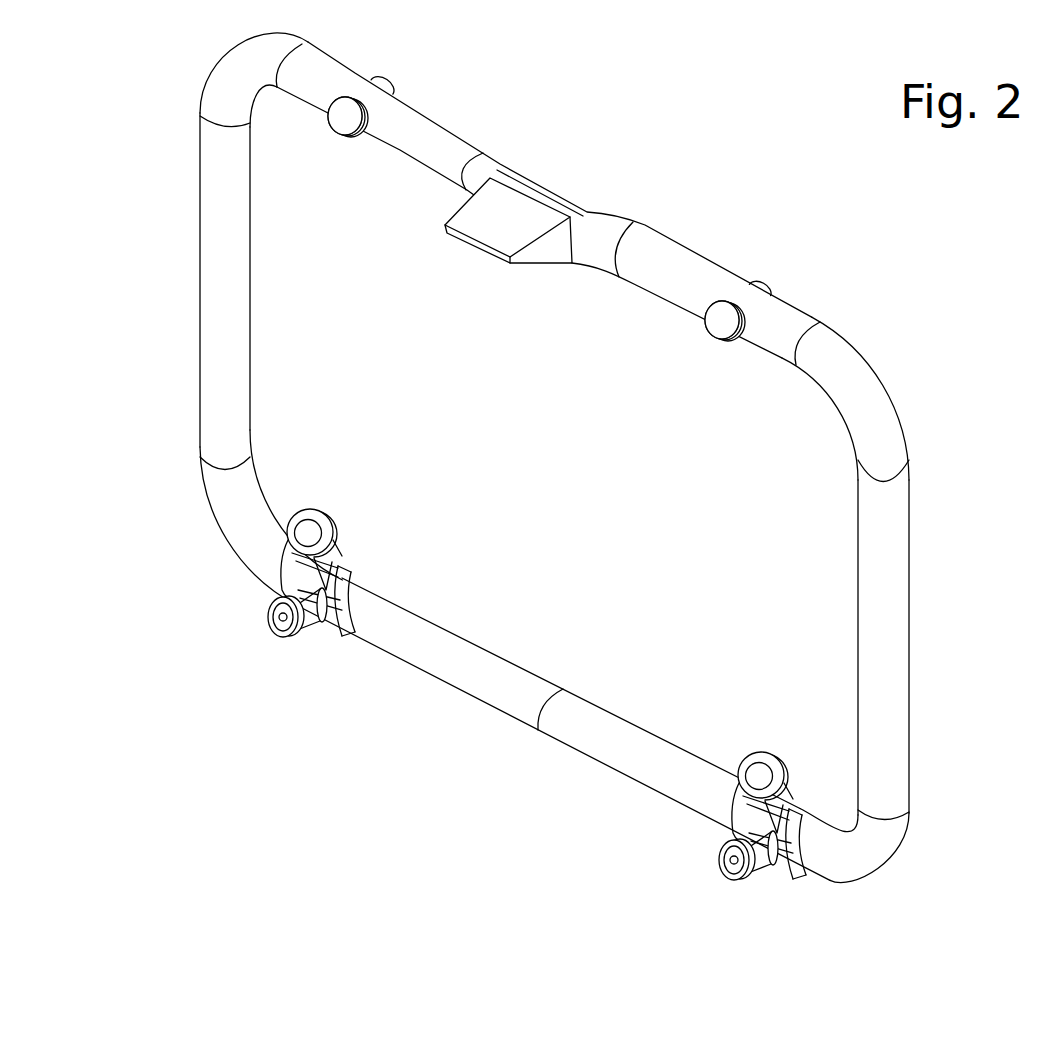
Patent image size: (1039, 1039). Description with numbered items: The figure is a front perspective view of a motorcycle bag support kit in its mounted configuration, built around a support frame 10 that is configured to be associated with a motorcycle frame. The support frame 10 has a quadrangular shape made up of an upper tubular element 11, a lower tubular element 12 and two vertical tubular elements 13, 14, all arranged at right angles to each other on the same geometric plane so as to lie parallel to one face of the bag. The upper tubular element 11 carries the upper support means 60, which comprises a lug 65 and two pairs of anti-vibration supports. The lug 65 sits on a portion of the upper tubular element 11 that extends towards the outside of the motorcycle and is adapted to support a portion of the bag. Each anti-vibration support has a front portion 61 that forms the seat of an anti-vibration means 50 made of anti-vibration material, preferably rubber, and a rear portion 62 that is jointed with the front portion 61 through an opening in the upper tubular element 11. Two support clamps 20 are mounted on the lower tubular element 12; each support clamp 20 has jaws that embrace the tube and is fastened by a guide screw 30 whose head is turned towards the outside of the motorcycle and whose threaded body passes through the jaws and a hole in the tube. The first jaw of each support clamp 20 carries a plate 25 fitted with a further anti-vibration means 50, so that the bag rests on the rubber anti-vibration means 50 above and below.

The support frame 10 is at (234, 55).
The upper tubular element 11 is at (668, 262).
The lower tubular element 12 is at (483, 665).
The vertical tubular element 13 is at (200, 267).
The vertical tubular element 14 is at (883, 623).
The support clamp 20 is at (328, 640).
The plate 25 is at (332, 553).
The guide screw 30 is at (282, 629).
The anti-vibration means 50 is at (337, 113).
The upper support means 60 is at (371, 130).
The front portion 61 is at (352, 97).
The rear portion 62 is at (390, 79).
The lug 65 is at (512, 218).